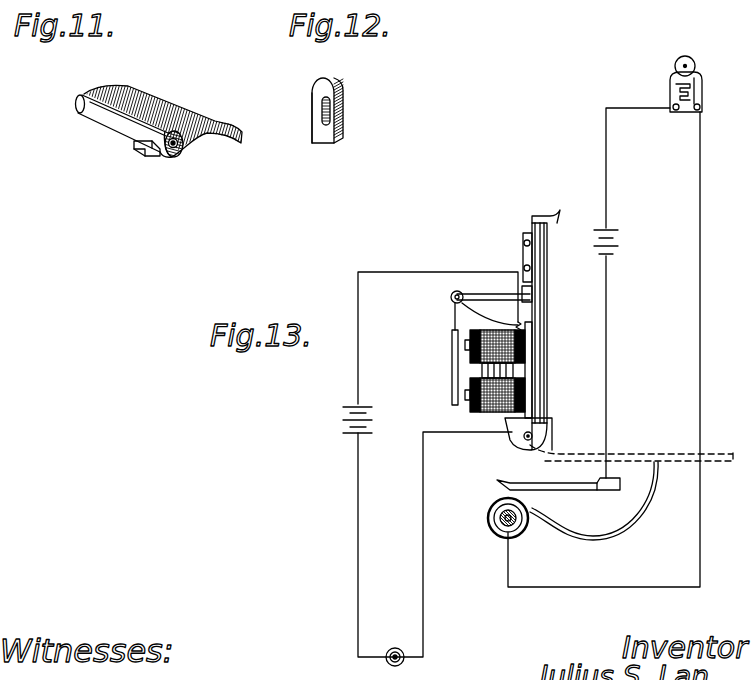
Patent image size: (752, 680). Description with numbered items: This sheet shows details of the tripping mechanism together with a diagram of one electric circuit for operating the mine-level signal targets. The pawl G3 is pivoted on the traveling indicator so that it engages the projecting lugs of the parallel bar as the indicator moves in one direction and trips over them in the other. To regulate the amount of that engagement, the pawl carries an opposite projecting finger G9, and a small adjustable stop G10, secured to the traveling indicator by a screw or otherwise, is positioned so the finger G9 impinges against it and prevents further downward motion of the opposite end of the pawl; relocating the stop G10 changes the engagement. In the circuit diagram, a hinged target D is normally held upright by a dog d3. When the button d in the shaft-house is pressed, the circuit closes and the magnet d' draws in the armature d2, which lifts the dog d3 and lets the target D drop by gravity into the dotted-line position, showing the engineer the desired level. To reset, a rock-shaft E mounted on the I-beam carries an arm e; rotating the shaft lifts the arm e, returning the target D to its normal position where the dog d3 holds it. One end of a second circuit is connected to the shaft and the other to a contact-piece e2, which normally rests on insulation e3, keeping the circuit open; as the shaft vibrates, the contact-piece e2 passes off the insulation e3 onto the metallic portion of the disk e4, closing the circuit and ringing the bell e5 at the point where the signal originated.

In FIG. 11, the pawl G3 is at (168, 115).
In FIG. 11, the projecting finger G9 is at (143, 147).
In FIG. 12, the adjustable stop G10 is at (335, 130).
In FIG. 13, the button d is at (395, 642).
In FIG. 13, the magnet d' is at (466, 371).
In FIG. 13, the armature d2 is at (452, 390).
In FIG. 13, the dog d3 is at (540, 215).
In FIG. 13, the hinged target D is at (548, 296).
In FIG. 13, the arm e is at (608, 532).
In FIG. 13, the contact-piece e2 is at (558, 489).
In FIG. 13, the insulation e3 is at (487, 518).
In FIG. 13, the disk e4 is at (514, 532).
In FIG. 13, the bell e5 is at (703, 97).
In FIG. 13, the rock-shaft E is at (500, 525).